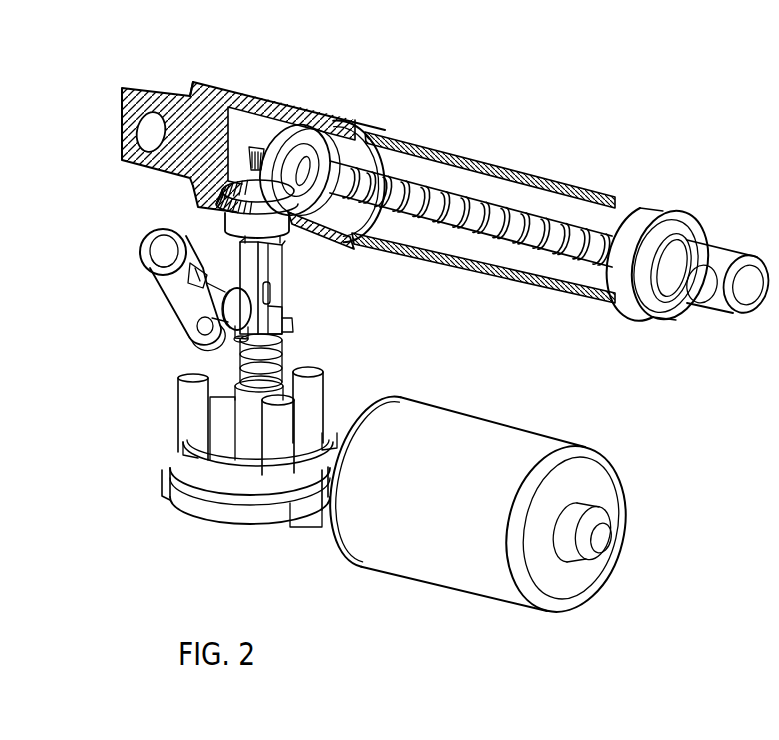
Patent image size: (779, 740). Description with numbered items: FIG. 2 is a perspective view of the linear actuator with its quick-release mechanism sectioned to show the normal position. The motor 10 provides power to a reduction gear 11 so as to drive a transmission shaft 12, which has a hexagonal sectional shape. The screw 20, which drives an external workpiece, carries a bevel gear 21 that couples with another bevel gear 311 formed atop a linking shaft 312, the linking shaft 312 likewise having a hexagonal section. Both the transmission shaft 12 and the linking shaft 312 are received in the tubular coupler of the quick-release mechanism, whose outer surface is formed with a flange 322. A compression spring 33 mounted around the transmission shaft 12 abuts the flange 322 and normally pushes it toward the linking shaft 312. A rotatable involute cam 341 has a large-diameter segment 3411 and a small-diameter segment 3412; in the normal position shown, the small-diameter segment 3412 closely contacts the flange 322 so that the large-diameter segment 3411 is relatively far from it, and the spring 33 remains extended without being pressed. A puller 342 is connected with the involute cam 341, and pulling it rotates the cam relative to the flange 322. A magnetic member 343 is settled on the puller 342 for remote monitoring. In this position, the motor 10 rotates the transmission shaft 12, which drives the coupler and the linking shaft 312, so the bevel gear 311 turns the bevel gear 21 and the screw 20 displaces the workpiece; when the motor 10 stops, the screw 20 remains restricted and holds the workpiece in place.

The motor 10 is at (473, 427).
The reduction gear 11 is at (180, 402).
The transmission shaft 12 is at (274, 316).
The screw 20 is at (518, 213).
The bevel gear 21 is at (265, 150).
The bevel gear 311 is at (209, 182).
The linking shaft 312 is at (272, 300).
The flange 322 is at (293, 325).
The spring 33 is at (285, 350).
The involute cam 341 is at (262, 292).
The large-diameter segment 3411 is at (226, 264).
The small-diameter segment 3412 is at (237, 334).
The puller 342 is at (177, 300).
The magnetic member 343 is at (141, 263).